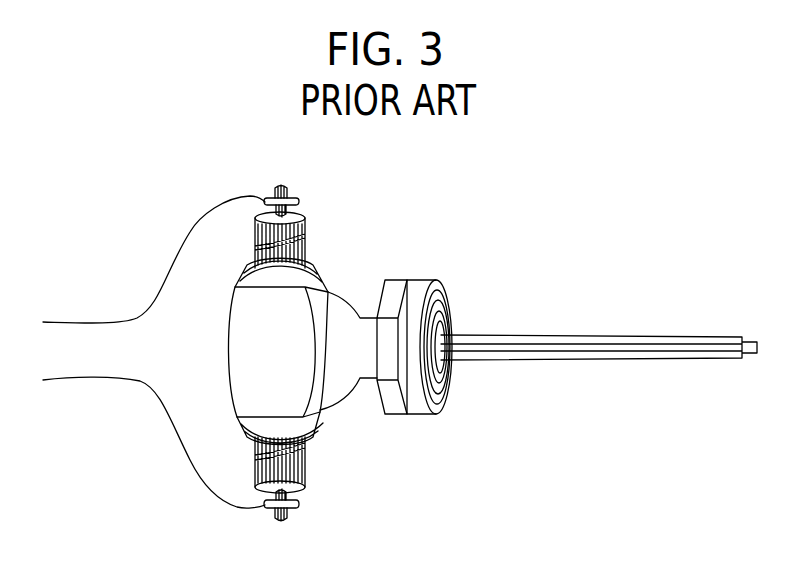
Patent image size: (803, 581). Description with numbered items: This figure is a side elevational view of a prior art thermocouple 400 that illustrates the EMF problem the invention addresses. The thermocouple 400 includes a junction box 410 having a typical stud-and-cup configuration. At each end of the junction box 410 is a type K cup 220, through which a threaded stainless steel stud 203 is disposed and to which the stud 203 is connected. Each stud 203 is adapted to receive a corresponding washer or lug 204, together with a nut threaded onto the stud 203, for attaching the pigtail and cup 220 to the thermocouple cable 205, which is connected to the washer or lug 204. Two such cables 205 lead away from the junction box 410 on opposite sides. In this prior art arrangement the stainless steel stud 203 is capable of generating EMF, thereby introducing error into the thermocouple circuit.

The threaded stainless steel stud 203 is at (282, 185).
The washer or lug 204 is at (299, 202).
The thermocouple cable 205 is at (129, 318).
The type K cup 220 is at (306, 248).
The prior art thermocouple 400 is at (575, 182).
The junction box 410 is at (232, 347).